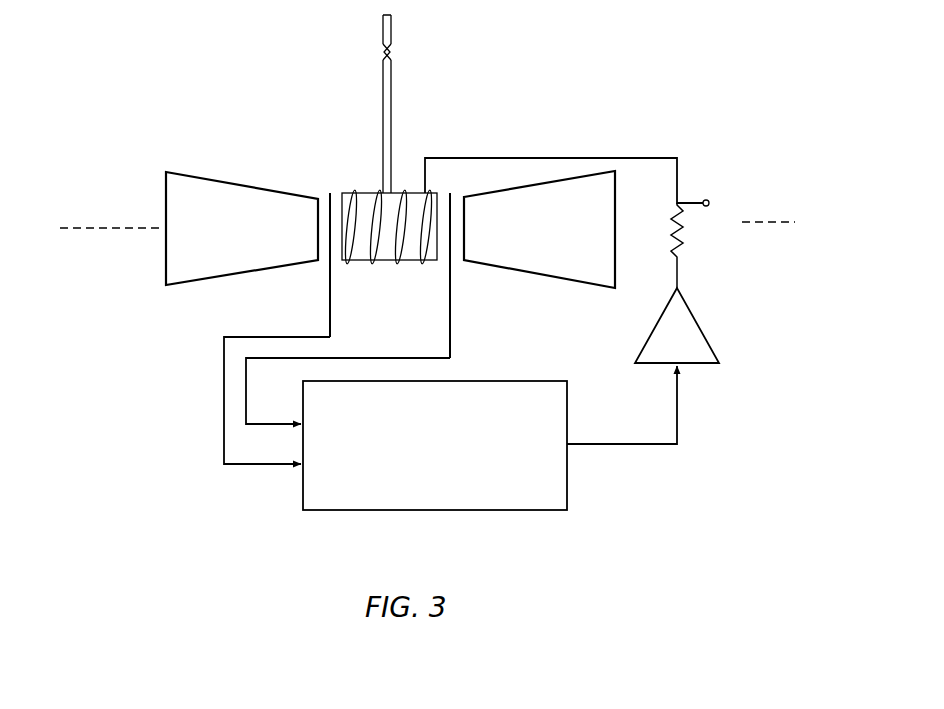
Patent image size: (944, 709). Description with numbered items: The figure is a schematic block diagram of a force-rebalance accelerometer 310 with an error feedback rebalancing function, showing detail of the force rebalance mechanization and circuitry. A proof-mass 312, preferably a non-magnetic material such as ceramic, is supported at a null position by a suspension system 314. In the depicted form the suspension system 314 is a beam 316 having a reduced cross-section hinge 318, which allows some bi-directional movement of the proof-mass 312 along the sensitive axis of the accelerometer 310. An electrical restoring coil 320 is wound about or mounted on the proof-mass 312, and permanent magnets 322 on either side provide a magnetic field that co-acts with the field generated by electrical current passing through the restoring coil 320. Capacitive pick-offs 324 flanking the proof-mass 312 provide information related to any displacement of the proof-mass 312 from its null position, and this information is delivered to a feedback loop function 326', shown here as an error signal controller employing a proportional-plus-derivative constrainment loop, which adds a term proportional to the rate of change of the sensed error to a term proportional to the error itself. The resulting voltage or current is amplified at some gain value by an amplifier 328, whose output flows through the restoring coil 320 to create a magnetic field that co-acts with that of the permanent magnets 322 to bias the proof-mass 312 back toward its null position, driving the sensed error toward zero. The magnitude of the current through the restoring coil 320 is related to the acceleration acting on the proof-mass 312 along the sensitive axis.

The force-rebalance accelerometer 310 is at (250, 73).
The proof-mass 312 is at (358, 191).
The suspension system 314 is at (434, 70).
The beam 316 is at (396, 110).
The reduced cross-section hinge 318 is at (380, 52).
The electrical restoring coil 320 is at (403, 273).
The permanent magnet 322 is at (249, 231).
The capacitive pick-off 324 is at (326, 262).
The feedback loop function 326' is at (414, 473).
The amplifier 328 is at (699, 310).